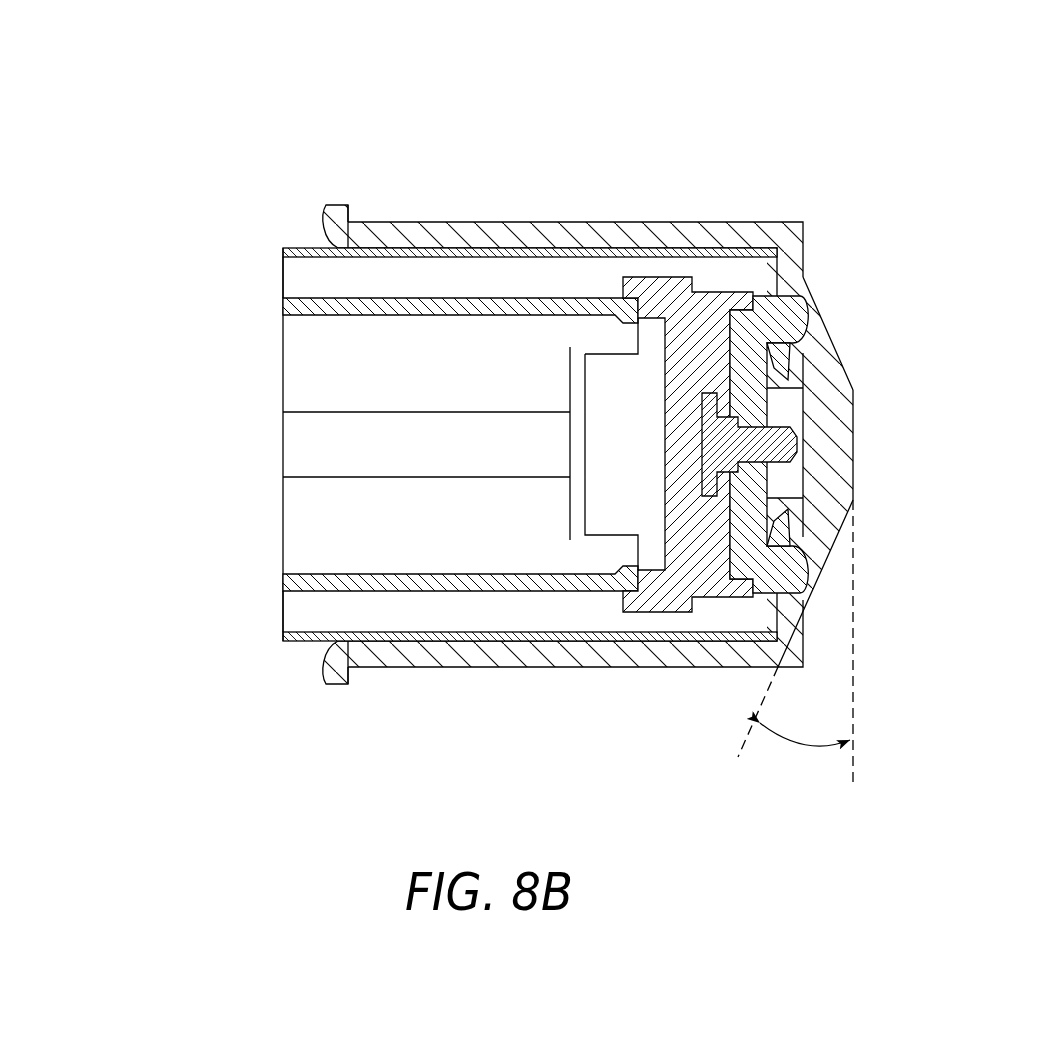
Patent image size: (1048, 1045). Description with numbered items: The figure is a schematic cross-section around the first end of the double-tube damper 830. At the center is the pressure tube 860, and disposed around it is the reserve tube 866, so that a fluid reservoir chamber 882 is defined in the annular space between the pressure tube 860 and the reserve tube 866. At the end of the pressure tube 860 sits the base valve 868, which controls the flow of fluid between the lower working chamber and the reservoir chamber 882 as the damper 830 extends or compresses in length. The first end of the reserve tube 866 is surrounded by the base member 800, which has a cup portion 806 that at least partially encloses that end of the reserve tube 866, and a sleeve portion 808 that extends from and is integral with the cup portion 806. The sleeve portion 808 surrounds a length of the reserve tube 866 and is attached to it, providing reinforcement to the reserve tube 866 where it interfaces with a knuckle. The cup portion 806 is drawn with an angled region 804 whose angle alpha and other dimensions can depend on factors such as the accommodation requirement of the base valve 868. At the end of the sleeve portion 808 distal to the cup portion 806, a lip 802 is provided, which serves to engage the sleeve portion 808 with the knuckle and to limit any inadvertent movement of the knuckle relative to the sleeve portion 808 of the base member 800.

The base member 800 is at (866, 522).
The lip 802 is at (356, 672).
The angled region 804 is at (842, 318).
The cup portion 806 is at (856, 443).
The sleeve portion 808 is at (684, 228).
The double-tube damper 830 is at (585, 424).
The pressure tube 860 is at (345, 302).
The reserve tube 866 is at (300, 637).
The base valve 868 is at (763, 305).
The fluid reservoir chamber 882 is at (305, 605).